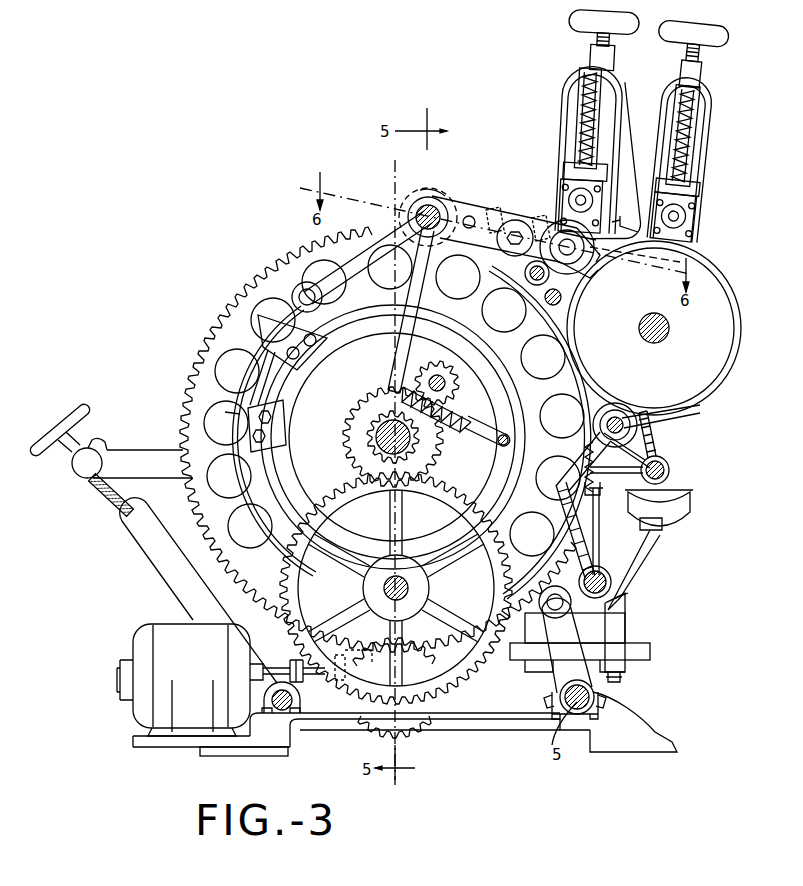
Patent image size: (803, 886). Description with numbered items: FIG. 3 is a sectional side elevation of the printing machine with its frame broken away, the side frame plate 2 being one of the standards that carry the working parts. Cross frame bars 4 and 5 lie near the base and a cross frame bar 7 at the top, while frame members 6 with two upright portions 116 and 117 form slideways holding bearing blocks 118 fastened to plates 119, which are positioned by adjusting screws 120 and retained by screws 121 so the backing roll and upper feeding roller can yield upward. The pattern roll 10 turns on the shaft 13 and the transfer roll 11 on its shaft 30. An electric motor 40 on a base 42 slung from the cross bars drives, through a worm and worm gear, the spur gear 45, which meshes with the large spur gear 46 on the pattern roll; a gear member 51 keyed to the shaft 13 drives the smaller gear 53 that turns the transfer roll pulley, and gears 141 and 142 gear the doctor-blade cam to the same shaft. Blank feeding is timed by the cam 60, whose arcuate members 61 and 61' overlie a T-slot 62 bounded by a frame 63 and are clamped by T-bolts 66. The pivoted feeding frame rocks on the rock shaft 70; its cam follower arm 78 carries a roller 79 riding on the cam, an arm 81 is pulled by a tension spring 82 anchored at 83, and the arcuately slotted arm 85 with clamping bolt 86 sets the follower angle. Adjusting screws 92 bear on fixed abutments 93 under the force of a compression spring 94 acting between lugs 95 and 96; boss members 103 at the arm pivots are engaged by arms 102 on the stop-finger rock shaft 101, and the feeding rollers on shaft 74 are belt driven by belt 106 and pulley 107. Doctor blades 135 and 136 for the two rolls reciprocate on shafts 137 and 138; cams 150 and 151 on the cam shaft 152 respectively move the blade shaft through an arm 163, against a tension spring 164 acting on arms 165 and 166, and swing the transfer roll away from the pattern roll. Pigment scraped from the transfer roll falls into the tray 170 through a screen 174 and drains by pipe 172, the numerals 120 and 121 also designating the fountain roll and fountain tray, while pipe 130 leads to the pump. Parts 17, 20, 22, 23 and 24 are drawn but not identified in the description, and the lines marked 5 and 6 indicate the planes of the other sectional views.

The side frame plate 2 is at (650, 725).
The cross frame bar 4 is at (282, 712).
The cross frame bar 5 is at (572, 652).
The frame member 6 is at (700, 237).
The cross frame bar 7 is at (560, 300).
The pattern roll 10 is at (440, 432).
The transfer roll 11 is at (654, 328).
The shaft 13 is at (375, 437).
The lever rod 17 is at (153, 452).
The lever 20 is at (155, 563).
The spring 22 is at (104, 494).
The handle 23 is at (85, 417).
The ball joint 24 is at (72, 466).
The shaft 30 is at (660, 335).
The electric motor 40 is at (183, 680).
The base 42 is at (325, 730).
The spur gear 45 is at (412, 728).
The large spur gear 46 is at (192, 378).
The gear member 51 is at (352, 412).
The gear 53 is at (458, 392).
The cam 60 is at (237, 371).
The arcuate member 61 is at (267, 401).
The arcuate member 61' is at (224, 407).
The T-slot 62 is at (375, 322).
The frame 63 is at (395, 306).
The T-bolt 66 is at (289, 334).
The rock shaft 70 is at (418, 205).
The shaft 74 is at (595, 262).
The cam follower arm 78 is at (368, 257).
The roller 79 is at (300, 290).
The arm 81 is at (412, 332).
The tension spring 82 is at (430, 368).
The anchorage 83 is at (496, 446).
The arcuately slotted arm 85 is at (458, 277).
The clamping bolt 86 is at (468, 216).
The adjusting screw 92 is at (494, 208).
The fixed abutment 93 is at (394, 400).
The compression spring 94 is at (598, 226).
The lug 95 is at (556, 232).
The lug 96 is at (525, 275).
The rock shaft 101 is at (562, 296).
The arm 102 is at (504, 310).
The boss member 103 is at (510, 220).
The belt 106 is at (537, 215).
The pulley 107 is at (668, 258).
The upright portion 116 is at (607, 125).
The upright portion 117 is at (652, 95).
The bearing block 118 is at (592, 200).
The plate 119 is at (600, 184).
The adjusting screw 120 is at (590, 100).
The screw 121 is at (598, 166).
The pipe 130 is at (622, 678).
The doctor blade 135 is at (592, 549).
The doctor blade 136 is at (640, 420).
The shaft 137 is at (604, 578).
The shaft 138 is at (670, 470).
The gear 141 is at (368, 450).
The gear 142 is at (330, 493).
The cam 150 is at (660, 440).
The cam 151 is at (593, 425).
The cam shaft 152 is at (660, 432).
The arm 163 is at (660, 445).
The tension spring 164 is at (590, 460).
The arm 165 is at (600, 500).
The arm 166 is at (599, 534).
The tray 170 is at (670, 510).
The pipe 172 is at (640, 562).
The screen 174 is at (690, 486).